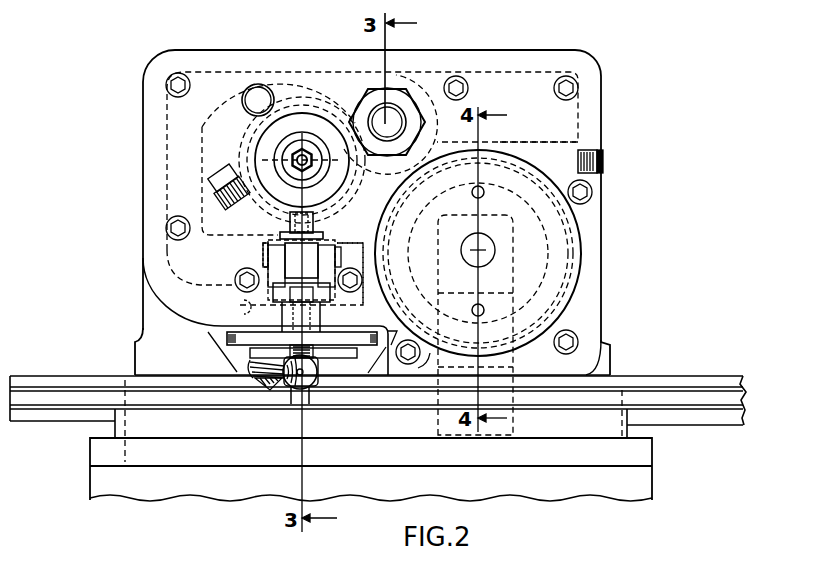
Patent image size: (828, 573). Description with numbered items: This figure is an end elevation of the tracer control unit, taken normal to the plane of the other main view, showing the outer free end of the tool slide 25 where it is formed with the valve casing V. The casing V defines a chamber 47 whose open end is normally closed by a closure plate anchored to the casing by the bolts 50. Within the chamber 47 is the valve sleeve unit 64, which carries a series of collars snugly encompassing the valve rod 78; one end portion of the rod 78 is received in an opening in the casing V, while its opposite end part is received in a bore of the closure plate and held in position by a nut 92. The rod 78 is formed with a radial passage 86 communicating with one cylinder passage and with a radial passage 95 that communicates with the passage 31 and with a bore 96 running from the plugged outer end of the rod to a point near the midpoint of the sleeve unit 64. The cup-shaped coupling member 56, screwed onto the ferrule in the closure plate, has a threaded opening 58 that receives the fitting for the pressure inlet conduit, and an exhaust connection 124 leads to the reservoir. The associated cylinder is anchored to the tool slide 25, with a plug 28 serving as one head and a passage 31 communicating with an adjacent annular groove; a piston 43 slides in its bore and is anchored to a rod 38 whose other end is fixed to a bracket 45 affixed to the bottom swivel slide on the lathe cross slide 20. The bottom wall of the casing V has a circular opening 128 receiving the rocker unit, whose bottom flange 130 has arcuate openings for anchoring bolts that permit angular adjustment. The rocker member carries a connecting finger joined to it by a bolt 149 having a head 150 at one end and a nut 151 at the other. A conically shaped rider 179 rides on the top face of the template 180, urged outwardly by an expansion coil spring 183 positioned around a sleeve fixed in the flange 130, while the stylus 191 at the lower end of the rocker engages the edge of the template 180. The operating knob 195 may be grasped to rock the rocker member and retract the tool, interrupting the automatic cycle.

The valve casing V is at (152, 100).
The machine base 20 is at (650, 490).
The tool slide 25 is at (590, 312).
The plug 28 is at (578, 262).
The passage 31 is at (484, 184).
The rod 38 is at (467, 257).
The piston 43 is at (575, 235).
The bracket 45 is at (458, 227).
The chamber 47 is at (175, 183).
The bolts 50 is at (178, 72).
The cup-shaped coupling member 56 is at (388, 100).
The threaded opening 58 is at (391, 118).
The valve sleeve unit 64 is at (308, 103).
The valve rod 78 is at (276, 218).
The radial passage 86 is at (546, 160).
The nut 92 is at (278, 159).
The radial passage 95 is at (560, 155).
The bore 96 is at (255, 134).
The exhaust connection 124 is at (257, 86).
The circular opening 128 is at (246, 307).
The bottom flange 130 is at (227, 341).
The bolt 149 is at (263, 249).
The head 150 is at (265, 261).
The nut 151 is at (334, 246).
The conically shaped rider 179 is at (263, 388).
The template 180 is at (635, 400).
The expansion coil spring 183 is at (257, 366).
The stylus 191 is at (293, 403).
The operating knob 195 is at (313, 388).